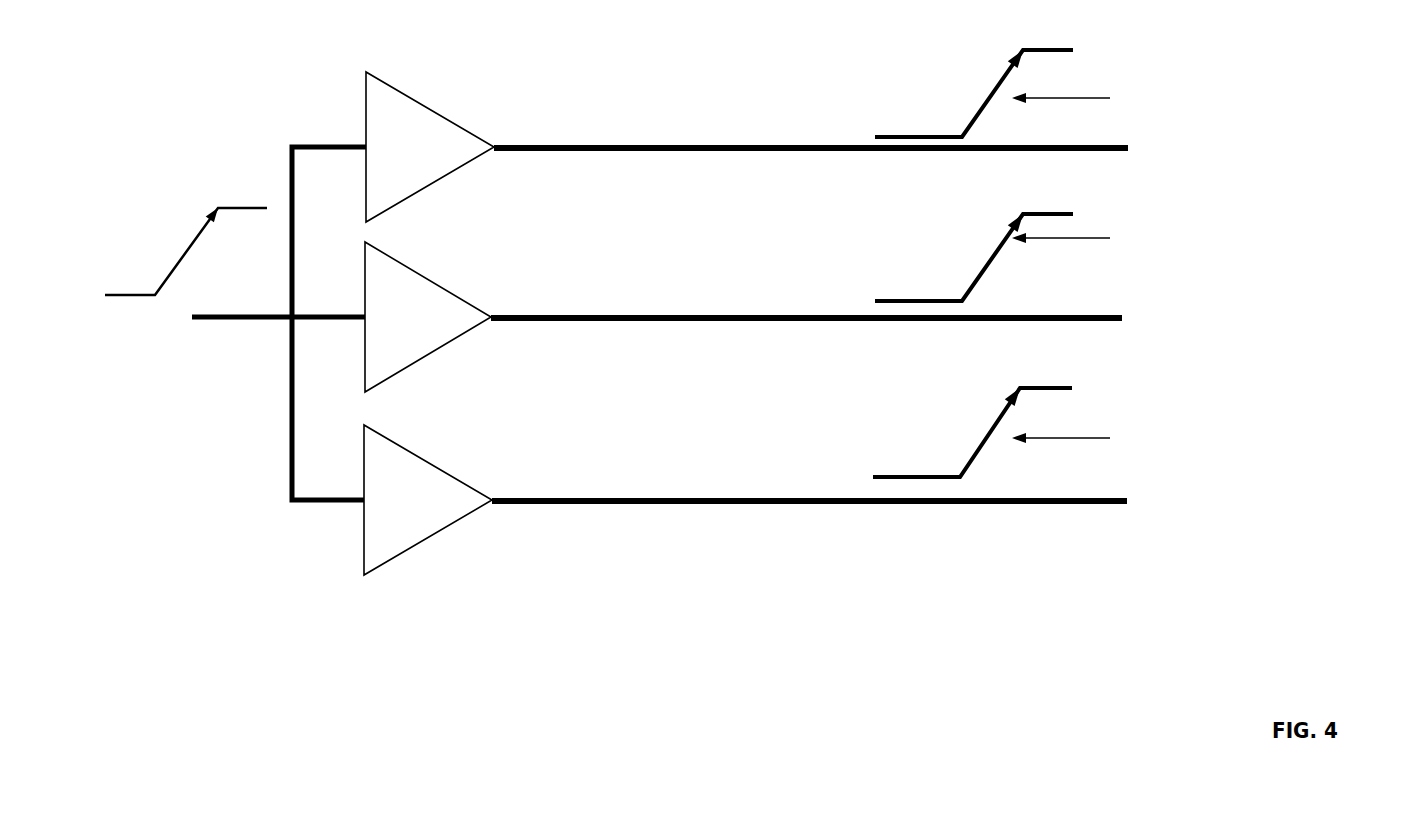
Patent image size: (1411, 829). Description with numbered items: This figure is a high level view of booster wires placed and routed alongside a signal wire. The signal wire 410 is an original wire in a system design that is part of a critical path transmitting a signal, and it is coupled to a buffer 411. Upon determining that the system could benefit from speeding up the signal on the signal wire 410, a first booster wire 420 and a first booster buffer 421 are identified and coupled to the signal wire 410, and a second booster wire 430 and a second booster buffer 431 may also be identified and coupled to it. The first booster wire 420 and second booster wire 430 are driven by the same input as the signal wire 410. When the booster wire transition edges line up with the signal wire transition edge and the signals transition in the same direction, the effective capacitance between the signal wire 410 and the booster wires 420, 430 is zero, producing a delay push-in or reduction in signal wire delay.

The signal wire 410 is at (588, 322).
The buffer 411 is at (415, 343).
The first booster wire 420 is at (590, 152).
The first booster buffer 421 is at (420, 182).
The second booster wire 430 is at (588, 503).
The second booster buffer 431 is at (413, 532).